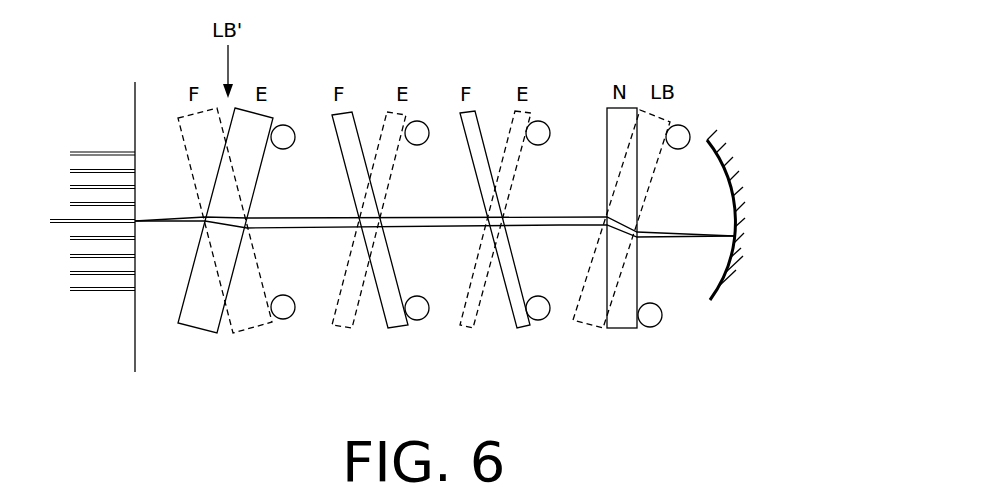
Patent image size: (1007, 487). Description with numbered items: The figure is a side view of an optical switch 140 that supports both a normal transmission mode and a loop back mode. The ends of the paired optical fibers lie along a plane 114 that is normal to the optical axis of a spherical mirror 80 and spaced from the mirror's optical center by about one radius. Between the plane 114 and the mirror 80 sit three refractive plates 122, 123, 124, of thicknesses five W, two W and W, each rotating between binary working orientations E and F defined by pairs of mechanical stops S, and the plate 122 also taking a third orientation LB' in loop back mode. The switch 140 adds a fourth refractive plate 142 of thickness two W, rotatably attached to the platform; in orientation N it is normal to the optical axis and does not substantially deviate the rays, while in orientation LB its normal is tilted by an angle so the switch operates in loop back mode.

The plane 114 is at (135, 108).
The plate 122 is at (248, 173).
The plate 123 is at (400, 329).
The plate 124 is at (523, 329).
The fourth refractive plate 142 is at (623, 330).
The spherical mirror 80 is at (708, 302).
The optical switch 140 is at (283, 381).